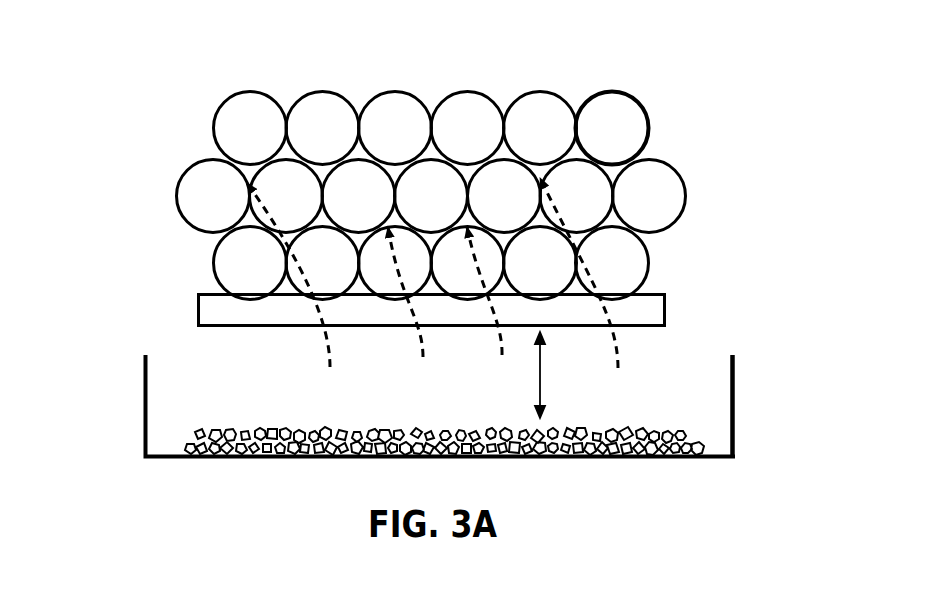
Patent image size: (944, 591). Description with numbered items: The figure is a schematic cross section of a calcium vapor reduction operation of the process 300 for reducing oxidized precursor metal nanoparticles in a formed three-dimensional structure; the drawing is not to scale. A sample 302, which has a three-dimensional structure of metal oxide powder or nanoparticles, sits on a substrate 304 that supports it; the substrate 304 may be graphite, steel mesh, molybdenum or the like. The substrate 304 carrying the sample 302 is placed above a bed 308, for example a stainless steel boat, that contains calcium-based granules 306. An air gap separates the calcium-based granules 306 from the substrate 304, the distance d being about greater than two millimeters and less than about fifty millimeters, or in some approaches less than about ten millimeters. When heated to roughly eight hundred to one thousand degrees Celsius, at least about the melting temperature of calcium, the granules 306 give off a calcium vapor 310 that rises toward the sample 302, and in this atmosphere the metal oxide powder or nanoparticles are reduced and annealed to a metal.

The process 300 is at (154, 29).
The sample 302 is at (589, 141).
The substrate 304 is at (638, 312).
The calcium-based granules 306 is at (702, 430).
The bed 308 is at (735, 367).
The calcium vapor 310 is at (432, 290).